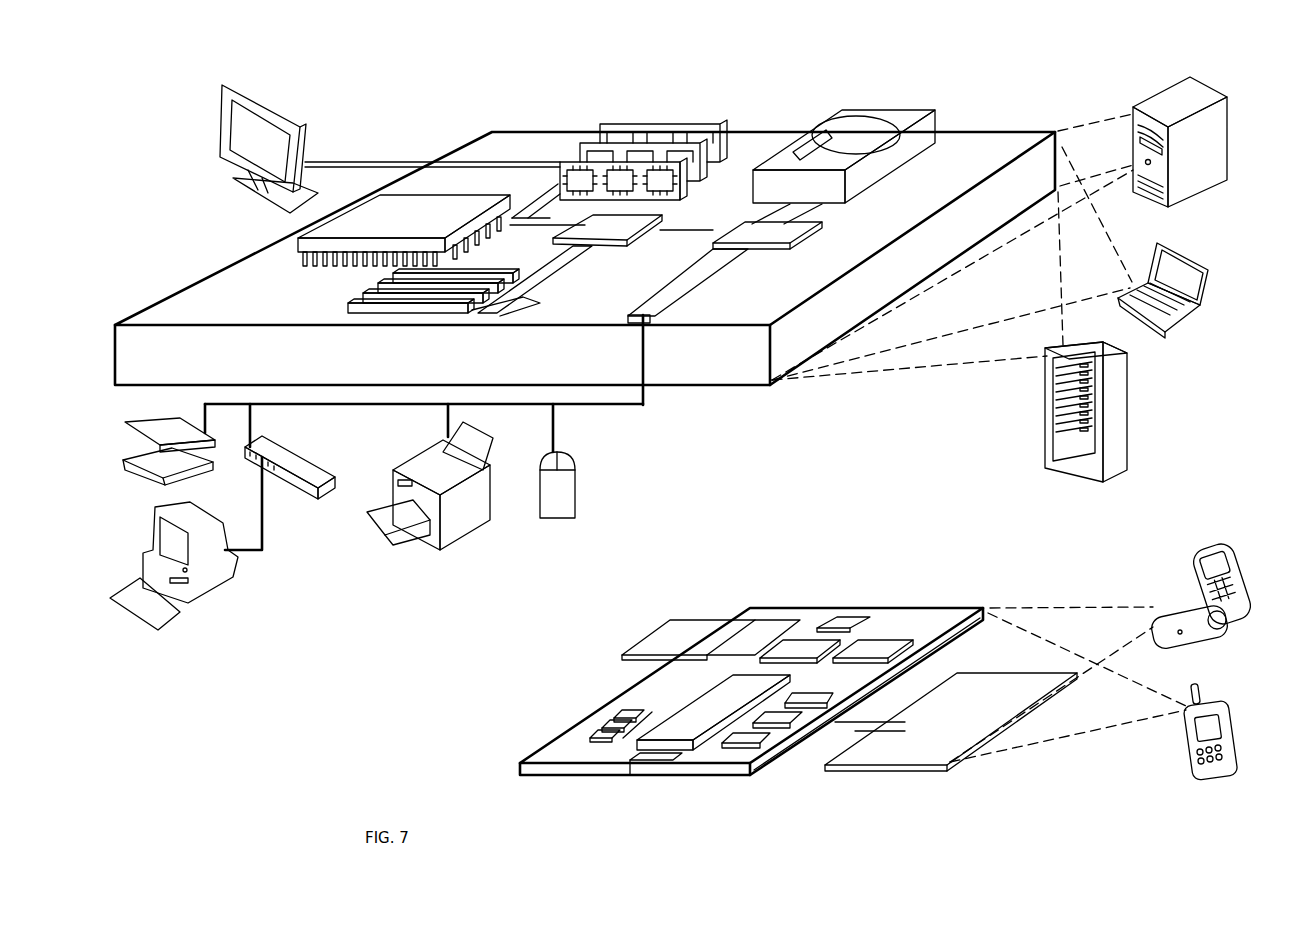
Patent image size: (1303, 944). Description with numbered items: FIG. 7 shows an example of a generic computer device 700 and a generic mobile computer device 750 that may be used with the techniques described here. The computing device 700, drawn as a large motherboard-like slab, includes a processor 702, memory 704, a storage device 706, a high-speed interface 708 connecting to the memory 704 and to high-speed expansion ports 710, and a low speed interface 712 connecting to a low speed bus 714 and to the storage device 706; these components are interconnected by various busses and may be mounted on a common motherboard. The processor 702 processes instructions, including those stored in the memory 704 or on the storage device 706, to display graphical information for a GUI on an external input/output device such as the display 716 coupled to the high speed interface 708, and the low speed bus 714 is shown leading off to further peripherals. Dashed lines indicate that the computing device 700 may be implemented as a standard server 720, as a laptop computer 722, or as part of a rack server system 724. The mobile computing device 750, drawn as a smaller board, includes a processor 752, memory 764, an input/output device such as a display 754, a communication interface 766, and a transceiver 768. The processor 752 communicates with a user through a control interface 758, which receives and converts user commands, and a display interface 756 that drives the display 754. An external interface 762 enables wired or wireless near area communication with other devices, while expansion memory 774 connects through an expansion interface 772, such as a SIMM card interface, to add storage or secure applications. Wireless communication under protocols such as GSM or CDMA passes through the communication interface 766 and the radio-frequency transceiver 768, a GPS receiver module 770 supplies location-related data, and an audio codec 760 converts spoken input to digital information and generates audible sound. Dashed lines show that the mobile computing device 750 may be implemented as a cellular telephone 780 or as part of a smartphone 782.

The computing device 700 is at (420, 104).
The processor 702 is at (297, 249).
The memory 704 is at (612, 126).
The storage device 706 is at (833, 122).
The high-speed interface 708 is at (593, 236).
The high-speed expansion ports 710 is at (367, 290).
The low speed interface 712 is at (768, 233).
The low speed bus 714 is at (653, 325).
The display 716 is at (218, 88).
The standard server 720 is at (1133, 115).
The laptop computer 722 is at (1157, 253).
The rack server system 724 is at (1047, 431).
The mobile computer device 750 is at (738, 586).
The processor 752 is at (693, 750).
The display 754 is at (945, 765).
The display interface 756 is at (758, 747).
The control interface 758 is at (793, 722).
The audio codec 760 is at (810, 702).
The external interface 762 is at (660, 760).
The memory 764 is at (610, 737).
The communication interface 766 is at (802, 647).
The transceiver 768 is at (875, 647).
The GPS receiver module 770 is at (837, 621).
The expansion interface 772 is at (728, 620).
The expansion memory 774 is at (662, 620).
The cellular telephone 780 is at (1208, 553).
The smartphone 782 is at (1194, 690).